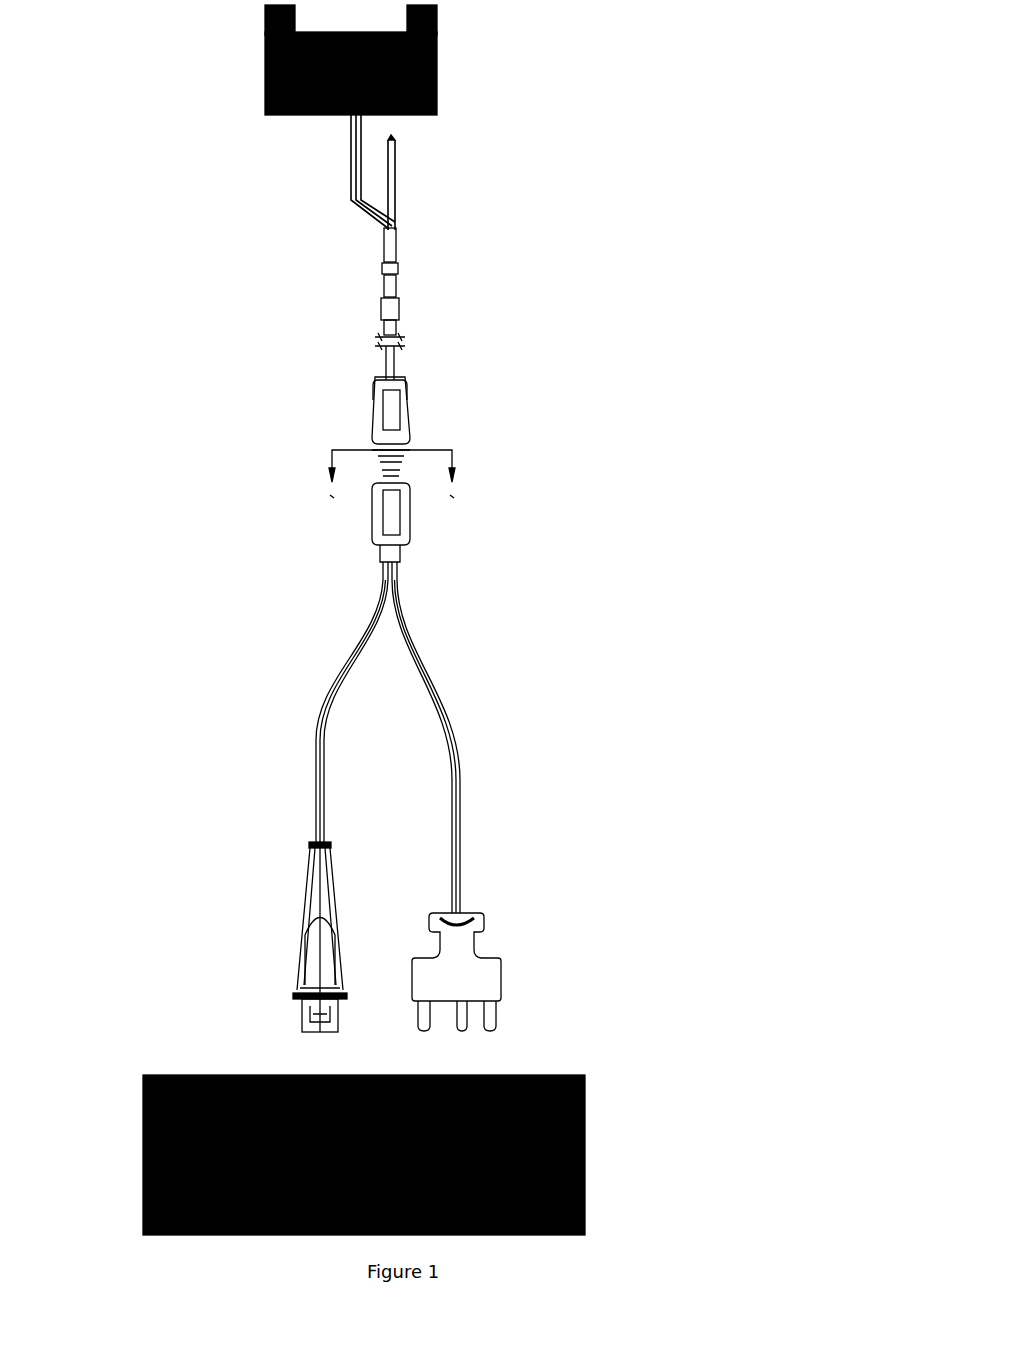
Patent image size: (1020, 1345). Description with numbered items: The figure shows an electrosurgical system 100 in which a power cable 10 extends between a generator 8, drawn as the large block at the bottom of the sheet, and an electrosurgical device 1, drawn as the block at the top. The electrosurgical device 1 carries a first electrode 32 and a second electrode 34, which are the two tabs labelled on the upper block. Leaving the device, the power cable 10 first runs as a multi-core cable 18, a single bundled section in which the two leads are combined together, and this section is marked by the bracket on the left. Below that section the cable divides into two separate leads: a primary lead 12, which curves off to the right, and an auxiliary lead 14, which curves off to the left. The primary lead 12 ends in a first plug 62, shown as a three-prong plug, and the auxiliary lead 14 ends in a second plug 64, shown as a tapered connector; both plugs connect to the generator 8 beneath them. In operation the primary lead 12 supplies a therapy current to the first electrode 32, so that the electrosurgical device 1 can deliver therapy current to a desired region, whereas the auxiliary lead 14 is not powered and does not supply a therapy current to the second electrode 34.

The electrosurgical system 100 is at (800, 77).
The electrosurgical device 1 is at (228, 97).
The first electrode 32 is at (437, 19).
The second electrode 34 is at (265, 25).
The generator 8 is at (585, 1085).
The power cable 10 is at (572, 1001).
The multi-core cable 18 is at (345, 533).
The auxiliary lead 14 is at (300, 752).
The primary lead 12 is at (480, 770).
The second plug 64 is at (290, 952).
The first plug 62 is at (500, 985).